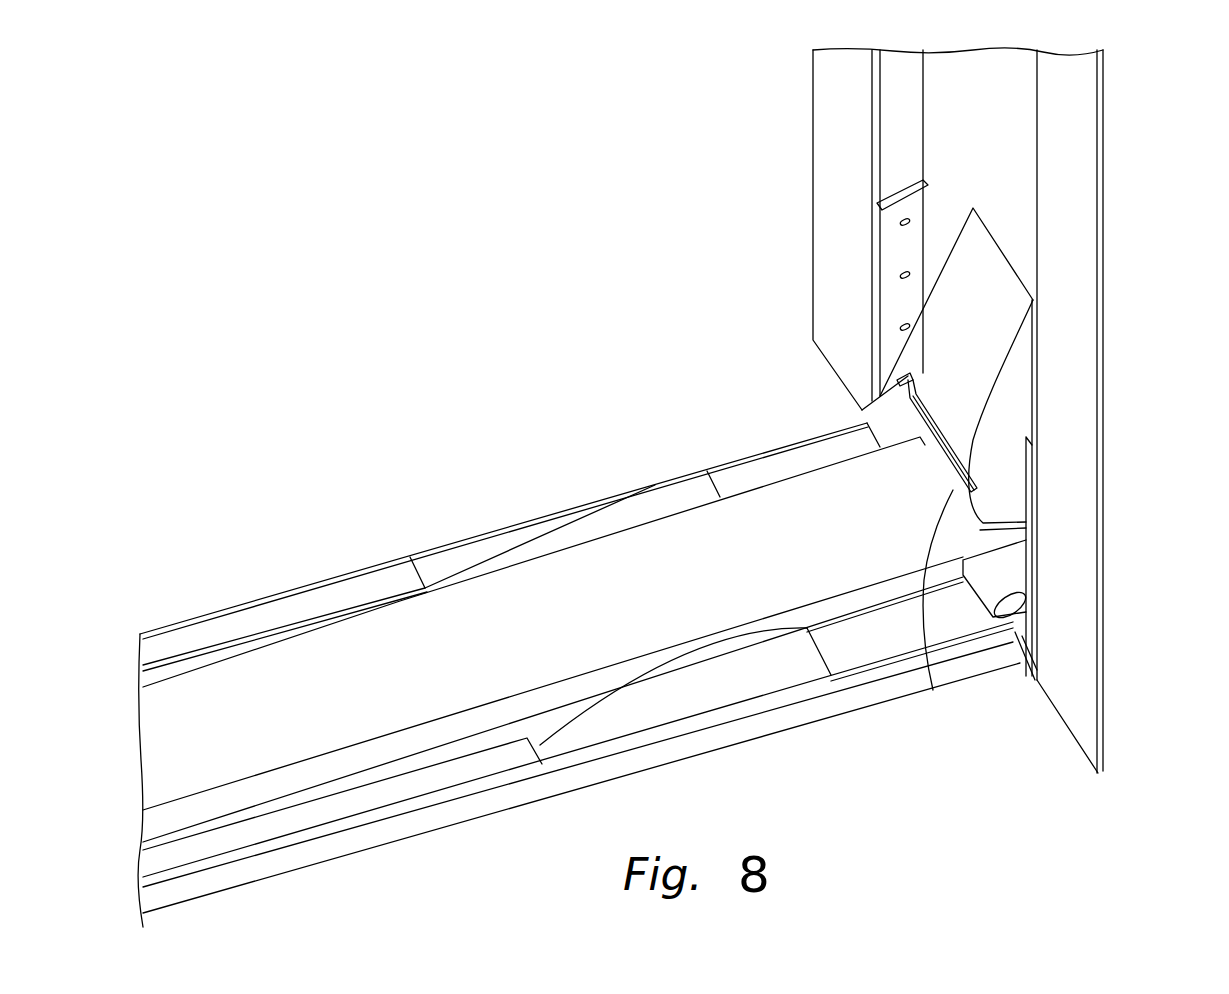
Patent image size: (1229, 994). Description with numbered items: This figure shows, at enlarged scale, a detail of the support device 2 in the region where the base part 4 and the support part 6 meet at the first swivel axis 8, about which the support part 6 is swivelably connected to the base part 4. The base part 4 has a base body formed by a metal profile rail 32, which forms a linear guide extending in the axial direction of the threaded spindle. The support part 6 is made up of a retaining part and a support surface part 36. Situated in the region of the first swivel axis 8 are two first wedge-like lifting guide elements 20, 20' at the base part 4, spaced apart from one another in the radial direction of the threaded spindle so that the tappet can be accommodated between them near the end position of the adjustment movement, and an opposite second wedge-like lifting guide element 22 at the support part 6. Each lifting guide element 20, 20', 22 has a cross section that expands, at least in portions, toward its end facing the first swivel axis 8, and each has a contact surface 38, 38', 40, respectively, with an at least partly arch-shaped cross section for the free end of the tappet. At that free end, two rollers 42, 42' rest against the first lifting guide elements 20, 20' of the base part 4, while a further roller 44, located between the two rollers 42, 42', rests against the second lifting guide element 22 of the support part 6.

The support device 2 is at (563, 268).
The base part 4 is at (393, 530).
The support part 6 is at (1138, 92).
The first swivel axis 8 is at (1021, 680).
The first wedge-like lifting guide element 20 is at (578, 713).
The first wedge-like lifting guide element 20' is at (534, 552).
The second wedge-like lifting guide element 22 is at (975, 383).
The profile rail 32 is at (268, 613).
The support surface part 36 is at (1083, 283).
The contact surface 38 is at (673, 752).
The contact surface 38' is at (540, 491).
The contact surface 40 is at (970, 257).
The roller 42 is at (1077, 575).
The roller 42' is at (868, 432).
The further roller 44 is at (933, 690).